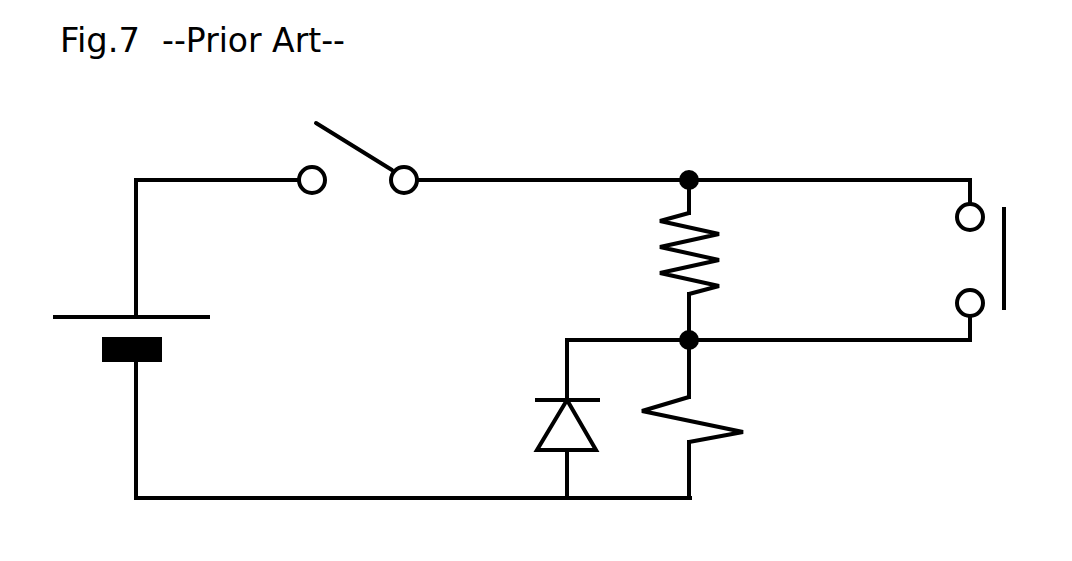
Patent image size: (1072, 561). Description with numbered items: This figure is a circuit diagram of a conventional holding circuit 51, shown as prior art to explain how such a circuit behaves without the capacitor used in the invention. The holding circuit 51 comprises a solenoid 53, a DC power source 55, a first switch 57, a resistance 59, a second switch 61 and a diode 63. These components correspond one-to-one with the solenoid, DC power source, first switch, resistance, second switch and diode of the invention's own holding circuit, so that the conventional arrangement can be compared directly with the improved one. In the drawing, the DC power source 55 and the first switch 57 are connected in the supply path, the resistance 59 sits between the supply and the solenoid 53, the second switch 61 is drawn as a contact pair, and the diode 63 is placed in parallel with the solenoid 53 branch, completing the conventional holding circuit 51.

The holding circuit 51 is at (912, 148).
The solenoid 53 is at (753, 423).
The DC power source 55 is at (187, 330).
The first switch 57 is at (351, 186).
The resistance 59 is at (648, 232).
The second switch 61 is at (1020, 233).
The diode 63 is at (520, 405).